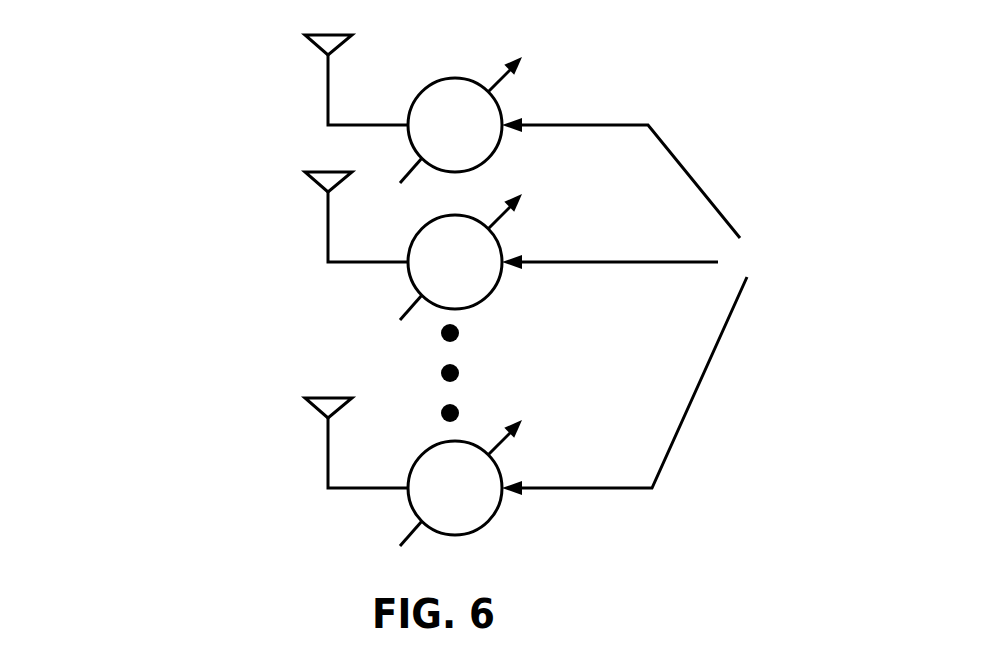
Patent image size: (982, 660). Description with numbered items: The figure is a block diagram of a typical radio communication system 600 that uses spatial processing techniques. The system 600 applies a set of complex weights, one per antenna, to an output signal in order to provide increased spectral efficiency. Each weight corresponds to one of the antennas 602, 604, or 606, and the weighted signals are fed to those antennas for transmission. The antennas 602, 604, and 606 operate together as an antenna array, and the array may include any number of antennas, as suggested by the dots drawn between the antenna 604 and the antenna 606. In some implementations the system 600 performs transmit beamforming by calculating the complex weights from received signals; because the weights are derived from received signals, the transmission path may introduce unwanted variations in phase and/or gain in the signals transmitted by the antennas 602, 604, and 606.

The radio communication system 600 is at (789, 80).
The antenna 602 is at (322, 42).
The antenna 604 is at (322, 179).
The antenna 606 is at (322, 410).